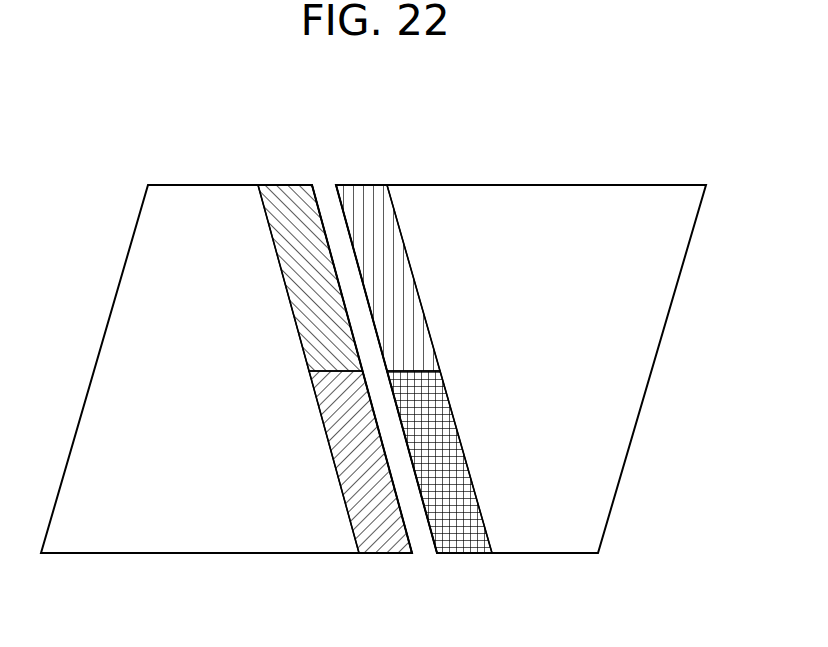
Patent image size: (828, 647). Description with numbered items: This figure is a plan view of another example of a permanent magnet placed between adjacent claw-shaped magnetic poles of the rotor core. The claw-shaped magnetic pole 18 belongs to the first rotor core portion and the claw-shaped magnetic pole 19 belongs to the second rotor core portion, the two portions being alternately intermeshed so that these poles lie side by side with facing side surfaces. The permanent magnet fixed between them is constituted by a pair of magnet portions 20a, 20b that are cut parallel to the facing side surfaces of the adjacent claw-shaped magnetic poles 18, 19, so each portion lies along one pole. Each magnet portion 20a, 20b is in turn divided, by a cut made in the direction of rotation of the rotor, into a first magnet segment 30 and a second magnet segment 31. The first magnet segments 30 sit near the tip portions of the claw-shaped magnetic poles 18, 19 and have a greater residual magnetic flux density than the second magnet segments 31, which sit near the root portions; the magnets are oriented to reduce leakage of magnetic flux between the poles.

The claw-shaped magnetic pole 18 is at (138, 337).
The claw-shaped magnetic pole 19 is at (617, 362).
The magnet portion 20a is at (293, 196).
The magnet portion 20b is at (355, 203).
The first magnet segment 30 is at (288, 234).
The second magnet segment 31 is at (368, 222).